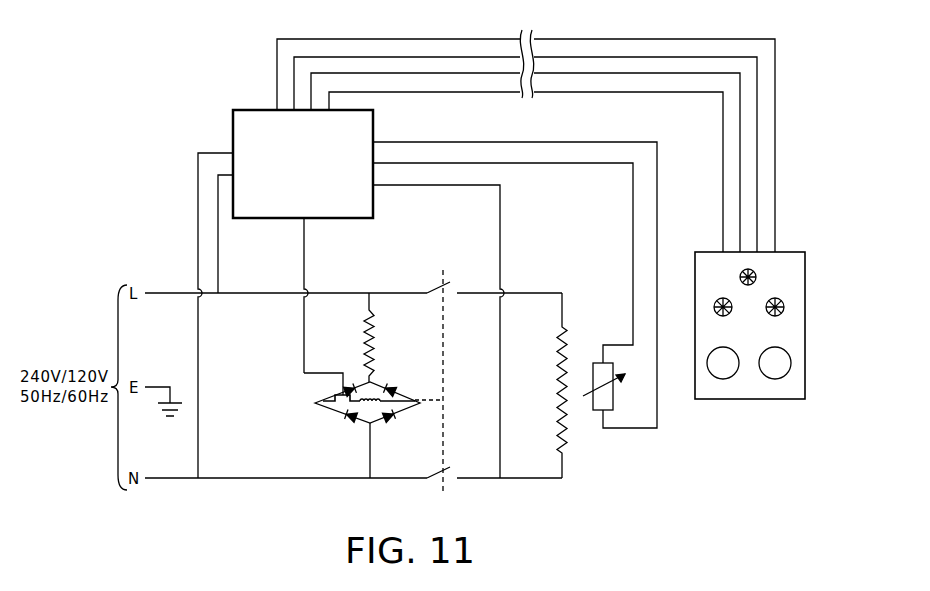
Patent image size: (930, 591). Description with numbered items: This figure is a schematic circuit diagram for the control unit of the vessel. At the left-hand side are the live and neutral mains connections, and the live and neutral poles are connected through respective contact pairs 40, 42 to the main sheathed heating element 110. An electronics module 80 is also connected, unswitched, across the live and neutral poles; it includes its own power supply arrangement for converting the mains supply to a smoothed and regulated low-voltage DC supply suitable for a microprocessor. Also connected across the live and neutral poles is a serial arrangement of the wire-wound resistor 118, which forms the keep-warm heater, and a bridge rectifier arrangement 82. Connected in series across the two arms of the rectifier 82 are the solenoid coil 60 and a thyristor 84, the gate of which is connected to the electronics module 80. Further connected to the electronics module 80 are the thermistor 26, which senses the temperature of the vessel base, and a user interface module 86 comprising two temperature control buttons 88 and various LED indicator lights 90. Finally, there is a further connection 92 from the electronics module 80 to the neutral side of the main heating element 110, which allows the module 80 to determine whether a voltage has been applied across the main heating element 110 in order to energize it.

The electronics module 80 is at (253, 110).
The further connection 92 is at (503, 244).
The contact pair 42 is at (470, 294).
The contact pair 40 is at (447, 283).
The wire-wound resistor 118 is at (373, 322).
The bridge rectifier arrangement 82 is at (425, 390).
The thyristor 84 is at (350, 416).
The solenoid coil 60 is at (371, 406).
The main sheathed heating element 110 is at (568, 335).
The thermistor 26 is at (605, 412).
The user interface module 86 is at (751, 380).
The LED indicator lights 90 is at (793, 302).
The temperature control buttons 88 is at (723, 380).